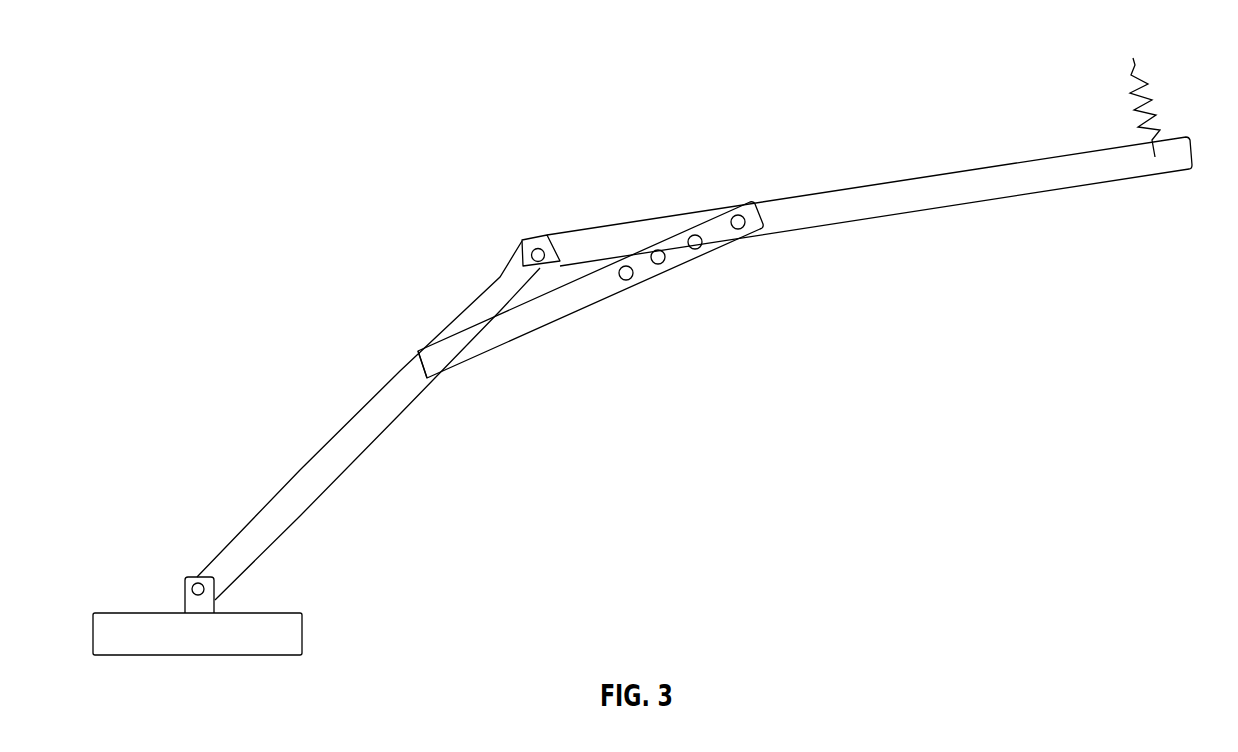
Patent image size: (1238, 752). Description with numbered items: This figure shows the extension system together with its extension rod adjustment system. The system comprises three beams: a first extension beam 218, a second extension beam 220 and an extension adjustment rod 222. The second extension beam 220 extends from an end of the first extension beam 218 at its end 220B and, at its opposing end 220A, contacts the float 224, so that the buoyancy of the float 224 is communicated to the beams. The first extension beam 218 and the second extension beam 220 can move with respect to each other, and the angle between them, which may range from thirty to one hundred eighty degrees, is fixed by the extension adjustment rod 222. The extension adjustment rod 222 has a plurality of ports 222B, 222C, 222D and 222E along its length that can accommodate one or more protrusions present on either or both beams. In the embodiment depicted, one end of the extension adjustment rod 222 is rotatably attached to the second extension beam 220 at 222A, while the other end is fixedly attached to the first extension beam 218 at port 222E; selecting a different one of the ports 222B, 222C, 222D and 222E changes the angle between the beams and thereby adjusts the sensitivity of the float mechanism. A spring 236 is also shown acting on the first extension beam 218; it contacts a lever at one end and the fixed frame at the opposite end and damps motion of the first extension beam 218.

The first extension beam 218 is at (950, 194).
The second extension beam 220 is at (387, 387).
The end of second extension beam contacting the float 220A is at (196, 578).
The end of second extension beam at first extension beam 220B is at (535, 248).
The extension adjustment rod 222 is at (530, 323).
The rotatable attachment point of extension adjustment rod 222A is at (437, 360).
The port 222B is at (630, 281).
The port 222C is at (661, 250).
The port 222D is at (702, 250).
The port 222E is at (737, 215).
The float 224 is at (290, 636).
The spring 236 is at (1145, 63).